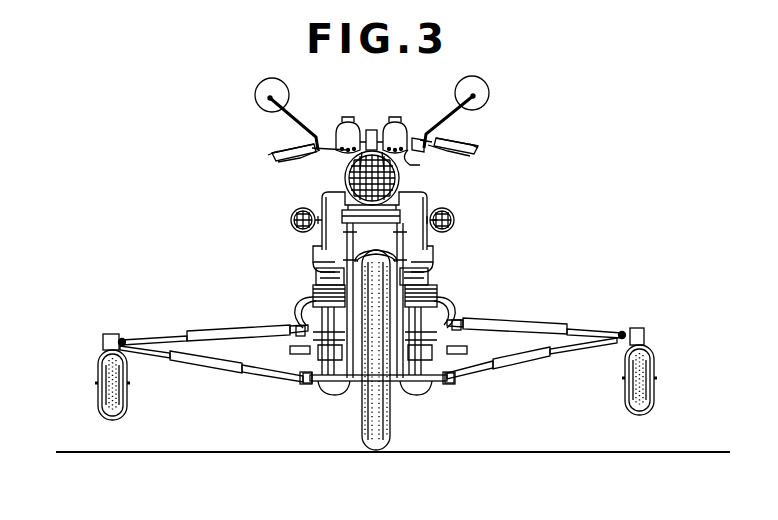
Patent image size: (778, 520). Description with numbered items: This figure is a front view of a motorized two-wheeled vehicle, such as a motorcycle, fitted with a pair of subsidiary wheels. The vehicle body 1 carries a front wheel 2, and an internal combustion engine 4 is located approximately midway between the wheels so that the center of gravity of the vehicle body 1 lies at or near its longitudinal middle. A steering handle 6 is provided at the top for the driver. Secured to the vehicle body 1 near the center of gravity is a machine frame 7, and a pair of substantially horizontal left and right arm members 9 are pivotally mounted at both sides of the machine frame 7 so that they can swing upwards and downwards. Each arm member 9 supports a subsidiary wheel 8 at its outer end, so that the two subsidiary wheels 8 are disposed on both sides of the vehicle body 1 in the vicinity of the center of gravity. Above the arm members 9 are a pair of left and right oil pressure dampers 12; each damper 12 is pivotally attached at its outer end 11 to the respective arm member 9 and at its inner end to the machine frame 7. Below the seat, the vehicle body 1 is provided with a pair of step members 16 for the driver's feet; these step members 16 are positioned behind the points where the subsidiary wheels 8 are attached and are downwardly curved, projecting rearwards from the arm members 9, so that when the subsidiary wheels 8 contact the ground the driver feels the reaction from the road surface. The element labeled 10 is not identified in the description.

The vehicle body 1 is at (372, 235).
The front wheel 2 is at (393, 477).
The internal combustion engine 4 is at (433, 287).
The steering handle 6 is at (278, 141).
The machine frame 7 is at (421, 392).
The subsidiary wheel 8 is at (103, 401).
The arm member 9 is at (238, 363).
The pivot brackets 10 is at (308, 384).
The outer end of damper 11 is at (128, 337).
The oil pressure damper 12 is at (217, 332).
The step member 16 is at (294, 345).